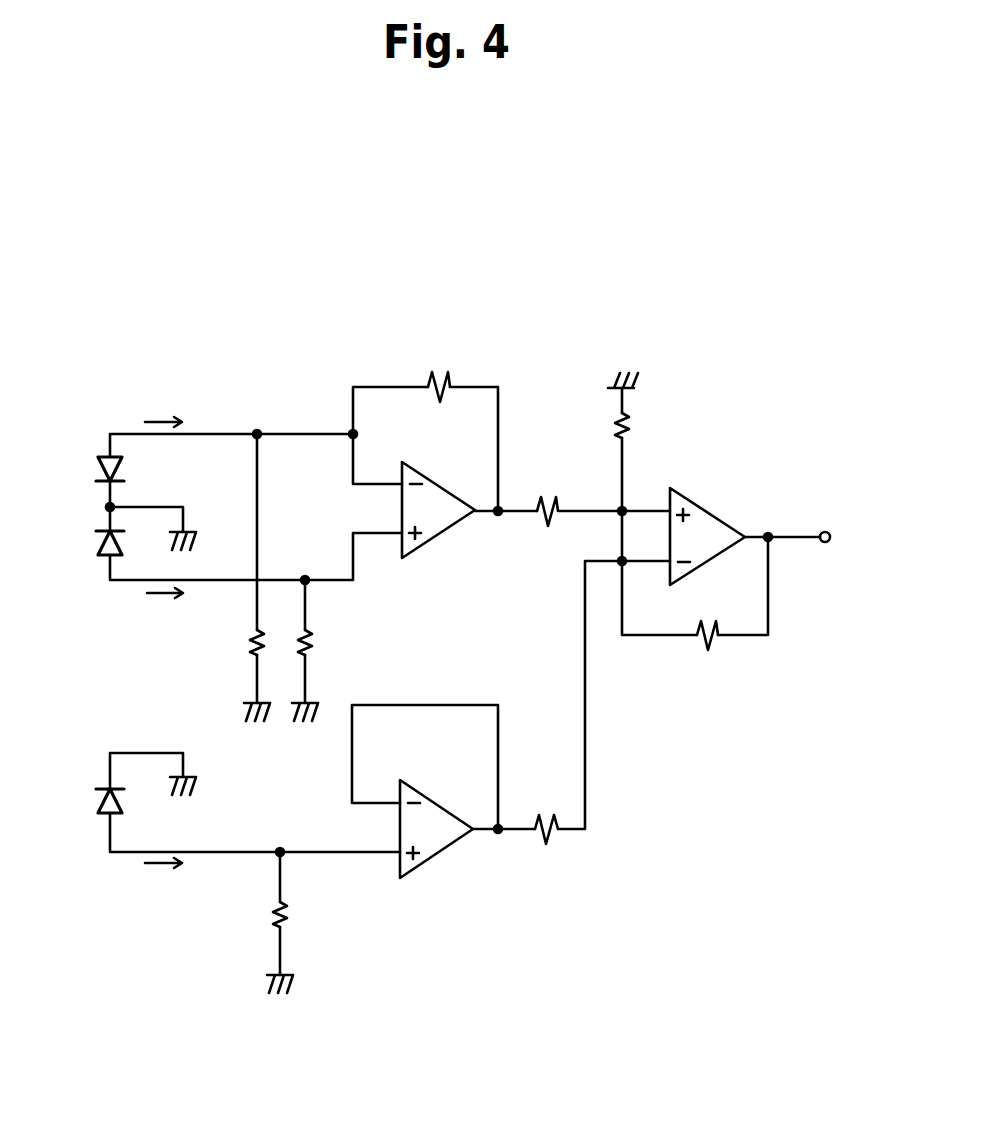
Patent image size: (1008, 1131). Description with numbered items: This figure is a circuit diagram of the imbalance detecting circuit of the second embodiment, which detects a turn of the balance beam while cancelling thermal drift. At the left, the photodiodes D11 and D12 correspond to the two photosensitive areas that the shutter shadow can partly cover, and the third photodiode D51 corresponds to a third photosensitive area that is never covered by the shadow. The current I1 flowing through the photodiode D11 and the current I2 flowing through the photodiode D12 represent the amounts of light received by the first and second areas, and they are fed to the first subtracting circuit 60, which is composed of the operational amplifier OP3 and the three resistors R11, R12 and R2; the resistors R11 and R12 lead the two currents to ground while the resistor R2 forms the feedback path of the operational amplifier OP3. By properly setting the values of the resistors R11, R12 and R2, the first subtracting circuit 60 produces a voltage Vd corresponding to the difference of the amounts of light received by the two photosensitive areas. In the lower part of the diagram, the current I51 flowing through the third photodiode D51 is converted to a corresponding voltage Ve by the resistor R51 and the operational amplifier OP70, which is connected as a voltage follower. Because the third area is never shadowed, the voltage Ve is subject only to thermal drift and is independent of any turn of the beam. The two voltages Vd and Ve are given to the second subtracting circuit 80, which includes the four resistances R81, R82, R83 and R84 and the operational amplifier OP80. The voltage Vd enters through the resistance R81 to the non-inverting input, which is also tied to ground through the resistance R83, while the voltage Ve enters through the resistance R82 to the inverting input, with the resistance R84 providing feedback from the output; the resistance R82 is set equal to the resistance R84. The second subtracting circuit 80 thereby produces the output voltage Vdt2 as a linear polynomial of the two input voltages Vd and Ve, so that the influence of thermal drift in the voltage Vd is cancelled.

The first subtracting circuit 60 is at (430, 369).
The second subtracting circuit 80 is at (710, 434).
The photodiode D11 is at (83, 469).
The photodiode D12 is at (83, 543).
The third photodiode D51 is at (83, 799).
The resistor R11 is at (226, 648).
The resistor R12 is at (333, 648).
The resistor R2 is at (440, 370).
The resistor R51 is at (312, 915).
The resistance R81 is at (576, 494).
The resistance R82 is at (548, 812).
The resistance R83 is at (654, 420).
The resistance R84 is at (709, 653).
The operational amplifier OP3 is at (435, 497).
The operational amplifier OP70 is at (434, 817).
The operational amplifier OP80 is at (704, 524).
The current I1 is at (163, 405).
The current I2 is at (163, 612).
The current I51 is at (162, 885).
The voltage Vd is at (506, 529).
The voltage Ve is at (504, 848).
The voltage Vdt2 is at (824, 541).